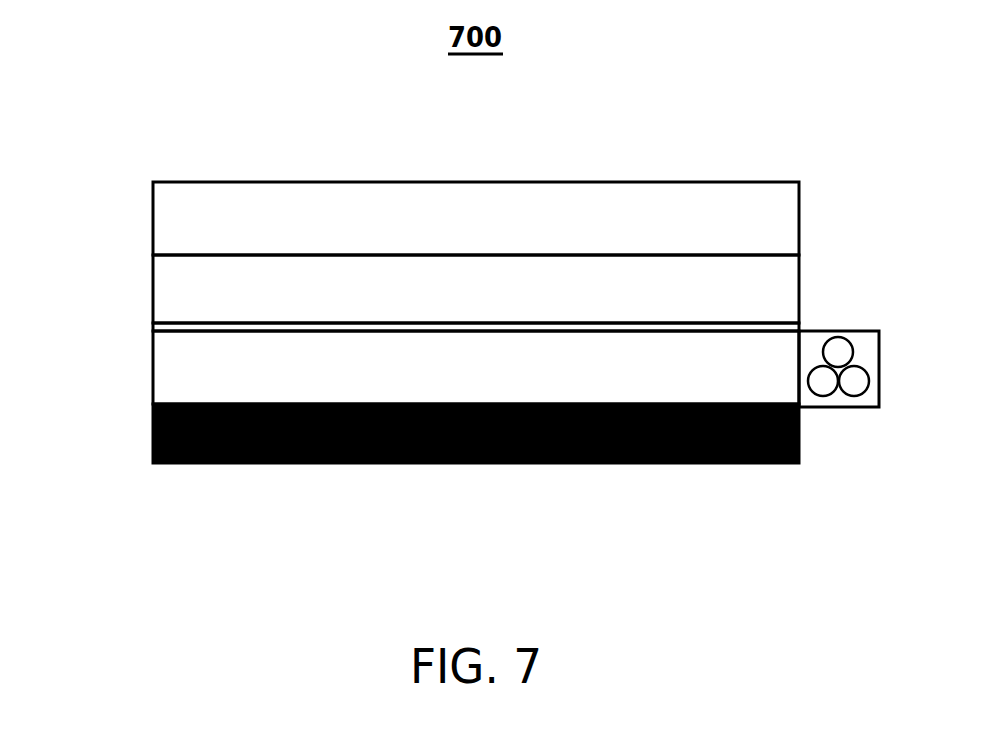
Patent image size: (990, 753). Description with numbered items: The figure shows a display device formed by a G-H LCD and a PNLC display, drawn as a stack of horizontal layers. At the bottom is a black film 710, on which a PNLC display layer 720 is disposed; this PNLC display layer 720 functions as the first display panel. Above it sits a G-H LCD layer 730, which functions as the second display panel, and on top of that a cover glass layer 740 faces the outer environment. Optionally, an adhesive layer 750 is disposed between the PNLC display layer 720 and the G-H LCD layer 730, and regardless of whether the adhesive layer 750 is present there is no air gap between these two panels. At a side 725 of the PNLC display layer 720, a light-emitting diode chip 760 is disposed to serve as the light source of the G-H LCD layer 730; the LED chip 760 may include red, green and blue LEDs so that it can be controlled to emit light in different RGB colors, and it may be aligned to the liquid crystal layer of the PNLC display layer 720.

The black film 710 is at (150, 428).
The PNLC display layer 720 is at (153, 373).
The side 725 is at (801, 393).
The G-H LCD layer 730 is at (153, 297).
The cover glass layer 740 is at (153, 214).
The adhesive layer 750 is at (800, 327).
The light-emitting diode (LED) chip 760 is at (865, 408).